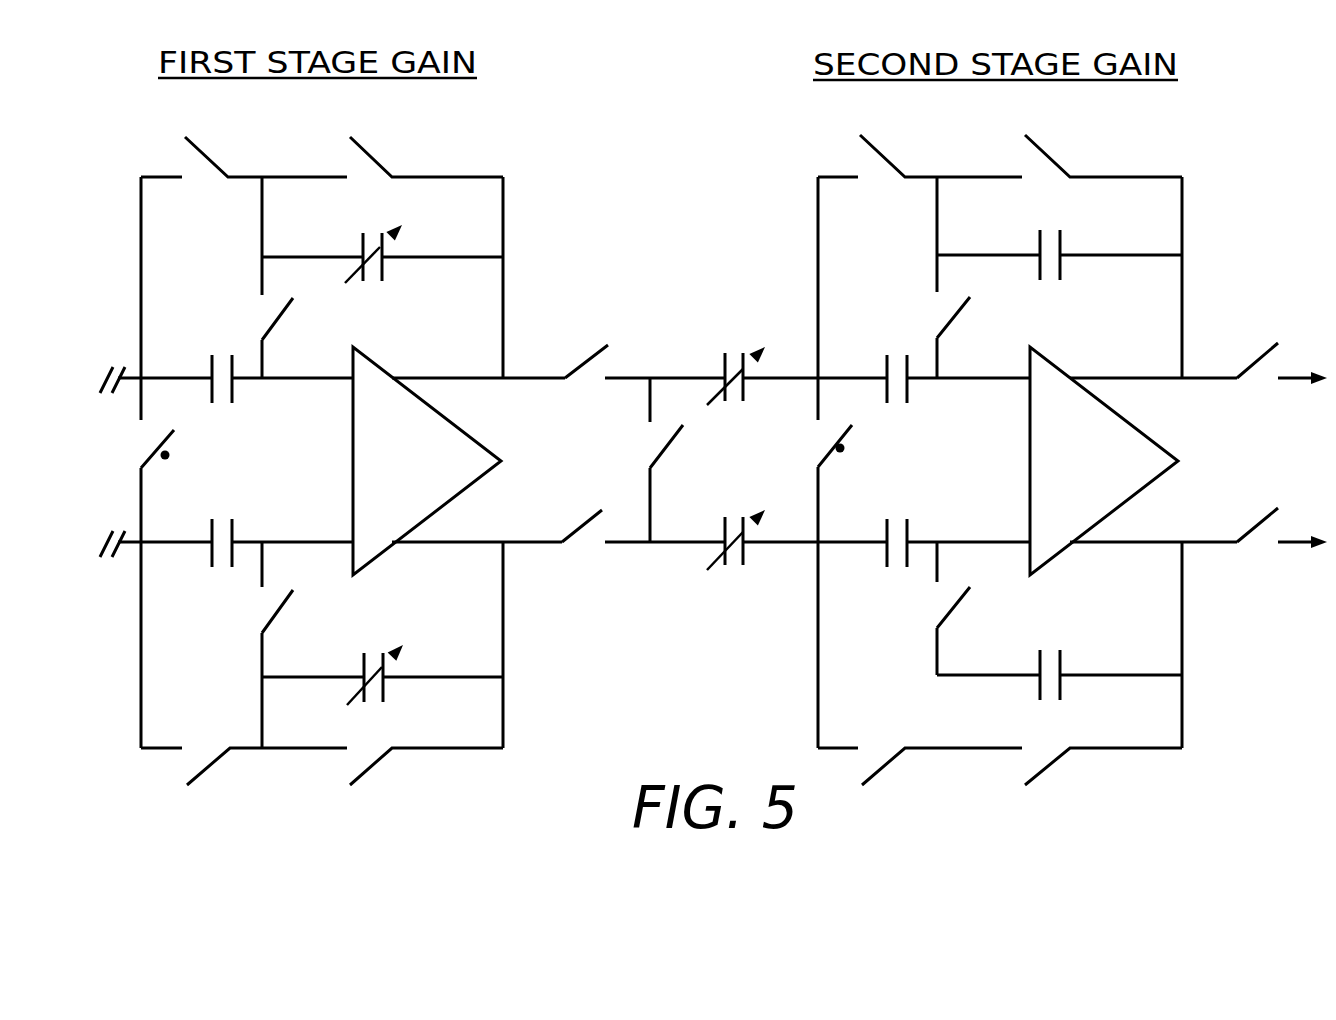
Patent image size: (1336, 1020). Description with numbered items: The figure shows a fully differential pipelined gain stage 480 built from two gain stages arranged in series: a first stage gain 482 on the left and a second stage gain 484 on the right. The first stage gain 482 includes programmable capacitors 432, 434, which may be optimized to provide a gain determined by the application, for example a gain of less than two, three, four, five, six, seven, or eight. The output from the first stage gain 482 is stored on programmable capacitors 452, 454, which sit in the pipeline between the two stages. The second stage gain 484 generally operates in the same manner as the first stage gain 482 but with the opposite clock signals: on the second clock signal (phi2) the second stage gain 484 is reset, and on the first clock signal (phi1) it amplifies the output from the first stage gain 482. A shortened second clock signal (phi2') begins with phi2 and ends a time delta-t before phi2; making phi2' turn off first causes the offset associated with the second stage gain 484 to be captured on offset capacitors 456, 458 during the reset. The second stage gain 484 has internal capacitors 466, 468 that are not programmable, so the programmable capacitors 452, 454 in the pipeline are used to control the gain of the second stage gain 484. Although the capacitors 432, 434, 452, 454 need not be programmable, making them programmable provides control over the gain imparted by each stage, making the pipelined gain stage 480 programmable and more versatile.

The programmable capacitor 432 is at (372, 230).
The programmable capacitor 434 is at (372, 650).
The programmable capacitor 452 is at (733, 350).
The programmable capacitor 454 is at (735, 566).
The offset capacitor 456 is at (913, 400).
The offset capacitor 458 is at (912, 517).
The internal capacitor 466 is at (1048, 227).
The internal capacitor 468 is at (1048, 647).
The pipelined gain stage 480 is at (592, 60).
The first stage gain 482 is at (543, 157).
The second stage gain 484 is at (782, 155).